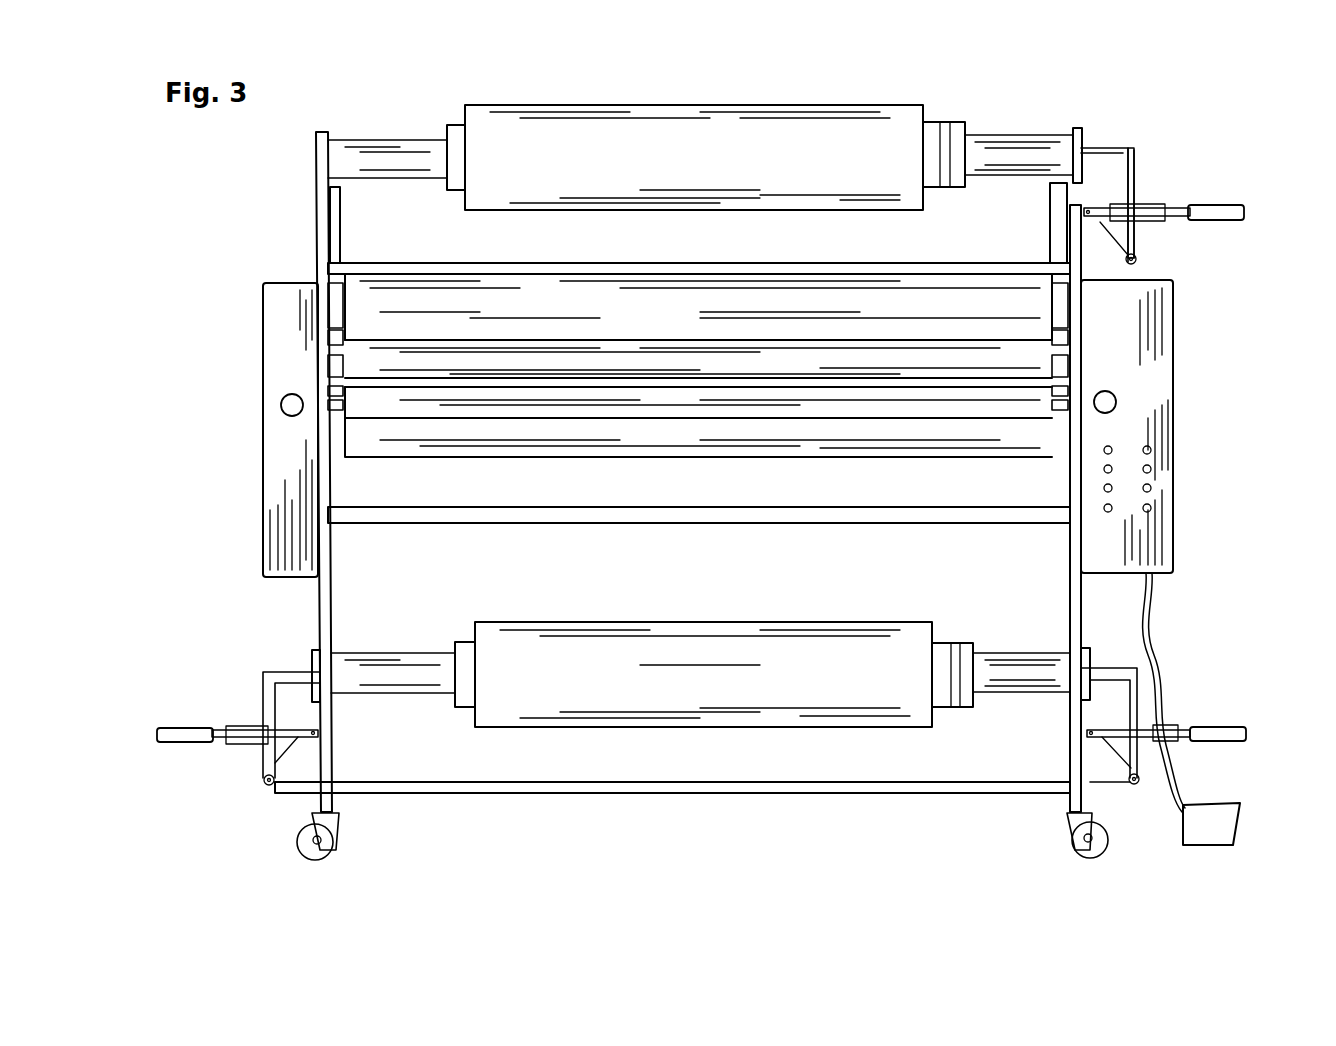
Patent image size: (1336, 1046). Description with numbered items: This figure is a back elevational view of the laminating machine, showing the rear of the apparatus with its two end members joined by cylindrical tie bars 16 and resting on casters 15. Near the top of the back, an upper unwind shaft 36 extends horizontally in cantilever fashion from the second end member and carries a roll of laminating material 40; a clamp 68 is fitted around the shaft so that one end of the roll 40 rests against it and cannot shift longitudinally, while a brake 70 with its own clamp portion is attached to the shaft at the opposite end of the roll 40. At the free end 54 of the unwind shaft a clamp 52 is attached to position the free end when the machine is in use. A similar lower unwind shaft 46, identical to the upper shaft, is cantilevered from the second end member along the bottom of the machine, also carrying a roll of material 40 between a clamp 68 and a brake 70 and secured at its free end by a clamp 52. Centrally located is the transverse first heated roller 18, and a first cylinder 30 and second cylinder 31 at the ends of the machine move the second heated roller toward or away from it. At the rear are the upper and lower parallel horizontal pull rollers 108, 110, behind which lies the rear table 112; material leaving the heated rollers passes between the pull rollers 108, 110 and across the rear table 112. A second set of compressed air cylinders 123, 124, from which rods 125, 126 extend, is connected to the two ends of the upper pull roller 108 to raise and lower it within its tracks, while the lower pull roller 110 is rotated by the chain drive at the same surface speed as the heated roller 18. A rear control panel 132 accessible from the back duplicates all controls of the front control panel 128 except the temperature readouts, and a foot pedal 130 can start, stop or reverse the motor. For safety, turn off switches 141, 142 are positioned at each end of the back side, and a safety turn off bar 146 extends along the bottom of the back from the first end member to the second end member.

The casters 15 is at (325, 858).
The tie bars 16 is at (602, 263).
The first heated roller 18 is at (707, 274).
The first cylinder 30 is at (1062, 195).
The second cylinder 31 is at (334, 206).
The unwind shaft 36 is at (1022, 135).
The roll of laminating material 40 is at (618, 105).
The lower unwind shaft 46 is at (1040, 693).
The clamp 52 is at (270, 790).
The free end of unwind shaft 54 is at (1210, 200).
The clamp 68 is at (450, 126).
The brake 70 is at (937, 122).
The upper pull roller 108 is at (455, 340).
The lower pull roller 110 is at (515, 418).
The rear table 112 is at (380, 383).
The compressed air cylinder 123 is at (330, 300).
The compressed air cylinder 124 is at (1060, 300).
The rod 125 is at (330, 338).
The rod 126 is at (1060, 335).
The front control panel 128 is at (1178, 548).
The foot pedal 130 is at (1240, 805).
The rear control panel 132 is at (1178, 523).
The safety turn off switch 141 is at (280, 407).
The safety turn off switch 142 is at (1117, 396).
The safety turn off bar 146 is at (453, 796).